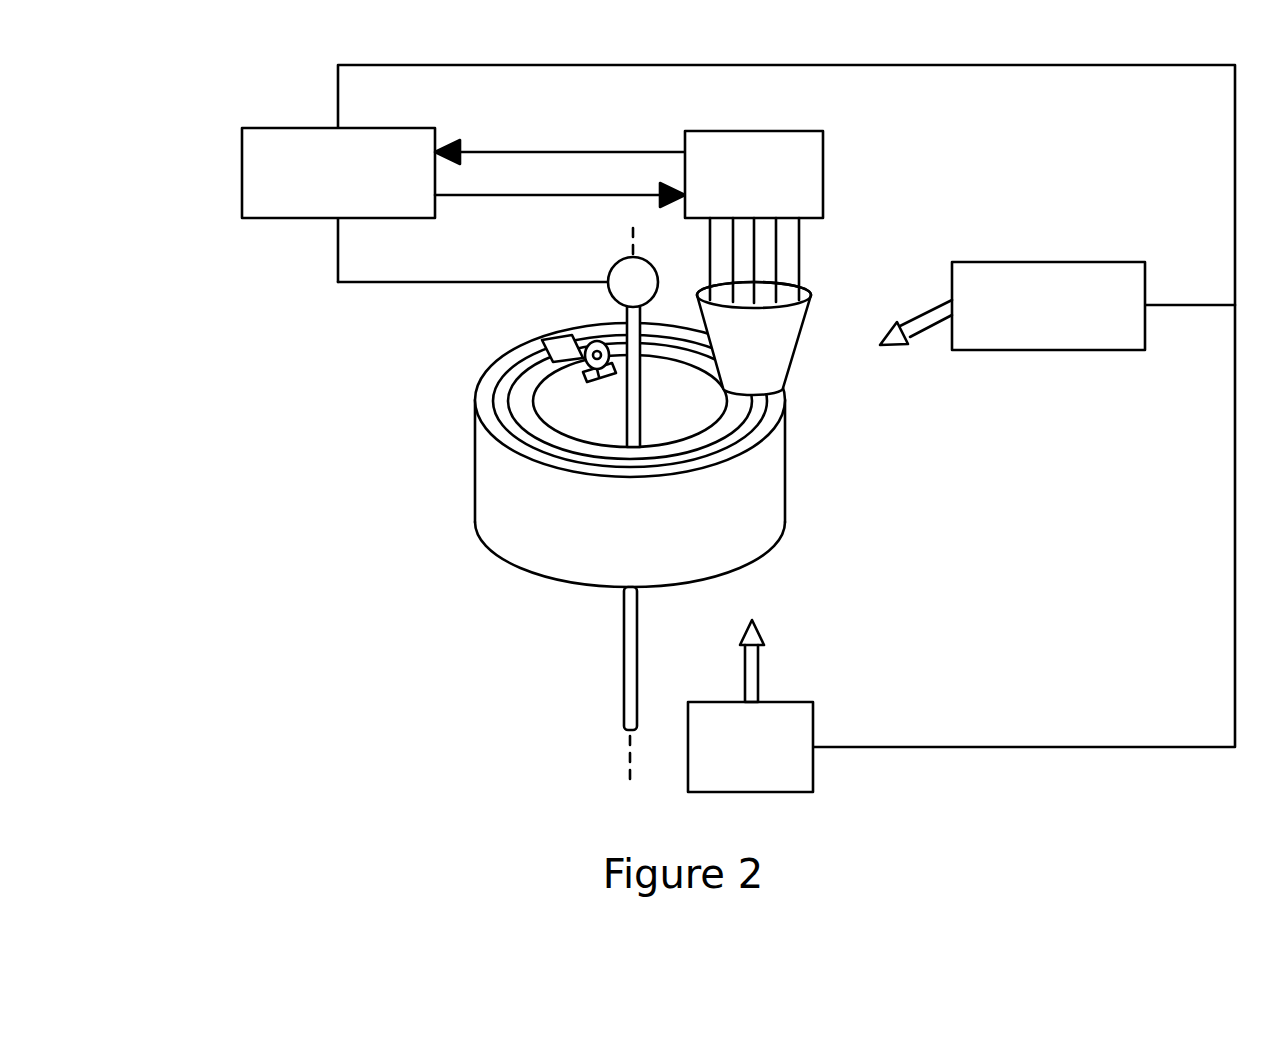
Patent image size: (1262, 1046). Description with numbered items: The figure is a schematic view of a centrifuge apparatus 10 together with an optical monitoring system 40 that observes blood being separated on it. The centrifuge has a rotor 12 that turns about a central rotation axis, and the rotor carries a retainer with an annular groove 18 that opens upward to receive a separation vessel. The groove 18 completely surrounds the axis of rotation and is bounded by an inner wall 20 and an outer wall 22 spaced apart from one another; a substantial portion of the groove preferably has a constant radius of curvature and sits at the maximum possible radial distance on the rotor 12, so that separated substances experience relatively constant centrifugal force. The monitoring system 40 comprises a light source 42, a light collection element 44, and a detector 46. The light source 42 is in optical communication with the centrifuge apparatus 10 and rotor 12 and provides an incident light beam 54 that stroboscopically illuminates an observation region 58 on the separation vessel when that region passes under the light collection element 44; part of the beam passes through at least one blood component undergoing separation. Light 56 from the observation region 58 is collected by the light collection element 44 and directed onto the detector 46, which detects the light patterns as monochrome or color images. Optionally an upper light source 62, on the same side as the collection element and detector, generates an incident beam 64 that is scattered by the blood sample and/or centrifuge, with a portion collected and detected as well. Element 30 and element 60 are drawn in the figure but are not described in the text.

The centrifuge apparatus 10 is at (660, 455).
The rotor 12 is at (758, 523).
The annular groove 18 is at (513, 423).
The inner wall 20 is at (543, 433).
The outer wall 22 is at (485, 412).
The sensor mount 30 is at (580, 352).
The optical monitoring system 40 is at (682, 440).
The light source 42 is at (758, 733).
The light collection element 44 is at (794, 306).
The detector 46 is at (803, 168).
The incident light beam 54 is at (760, 667).
The light 56 is at (800, 255).
The observation region 58 is at (565, 343).
The controller 60 is at (270, 178).
The upper light source 62 is at (1065, 327).
The incident beam 64 is at (918, 333).